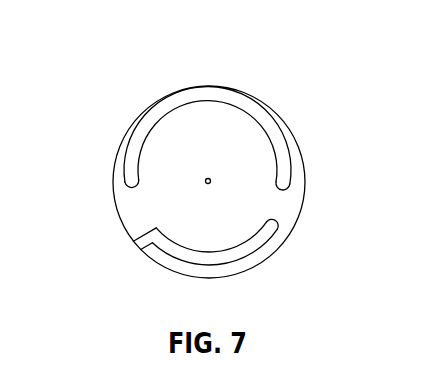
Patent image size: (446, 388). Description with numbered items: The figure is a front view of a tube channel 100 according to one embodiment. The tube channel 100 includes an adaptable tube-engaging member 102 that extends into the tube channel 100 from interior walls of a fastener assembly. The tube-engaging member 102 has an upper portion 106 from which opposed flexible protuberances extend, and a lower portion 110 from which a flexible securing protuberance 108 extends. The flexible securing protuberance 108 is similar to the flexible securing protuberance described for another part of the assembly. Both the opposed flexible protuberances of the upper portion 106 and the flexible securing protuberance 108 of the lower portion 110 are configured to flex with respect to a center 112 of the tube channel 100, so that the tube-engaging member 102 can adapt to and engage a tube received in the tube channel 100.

The tube channel 100 is at (294, 63).
The adaptable tube-engaging member 102 is at (210, 146).
The upper portion 106 is at (113, 183).
The flexible securing protuberance 108 is at (200, 263).
The lower portion 110 is at (155, 263).
The center 112 is at (206, 178).